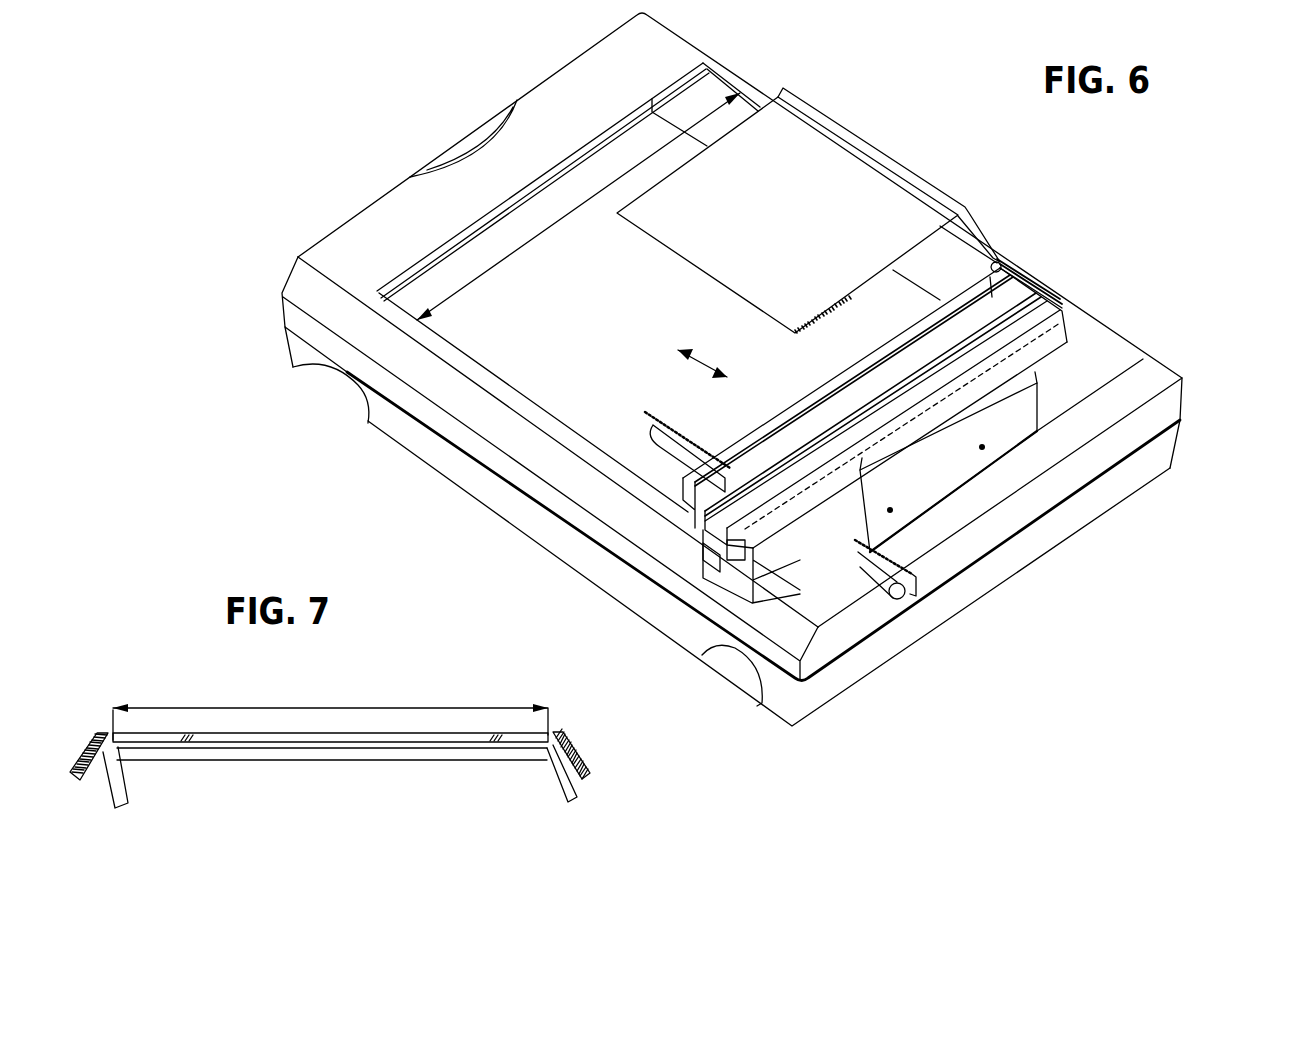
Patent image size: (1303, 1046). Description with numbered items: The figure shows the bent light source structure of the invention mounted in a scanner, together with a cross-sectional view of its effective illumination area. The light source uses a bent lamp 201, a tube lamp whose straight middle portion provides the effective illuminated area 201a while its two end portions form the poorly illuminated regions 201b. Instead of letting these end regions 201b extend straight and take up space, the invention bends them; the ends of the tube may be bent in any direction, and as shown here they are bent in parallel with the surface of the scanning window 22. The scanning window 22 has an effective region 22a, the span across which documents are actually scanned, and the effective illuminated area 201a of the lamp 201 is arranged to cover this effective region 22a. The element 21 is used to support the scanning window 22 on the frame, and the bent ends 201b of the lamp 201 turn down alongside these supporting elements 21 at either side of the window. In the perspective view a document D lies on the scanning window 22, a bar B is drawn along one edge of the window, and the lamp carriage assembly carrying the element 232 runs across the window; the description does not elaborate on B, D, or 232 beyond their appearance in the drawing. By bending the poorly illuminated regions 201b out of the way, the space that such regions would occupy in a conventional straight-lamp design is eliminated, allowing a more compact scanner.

In FIG. 6, the element 21 is at (1140, 380).
In FIG. 7, the element 21 is at (577, 750).
In FIG. 6, the scanning window 22 is at (620, 407).
In FIG. 7, the scanning window 22 is at (375, 738).
In FIG. 6, the effective region 22a is at (578, 206).
In FIG. 7, the effective region 22a is at (330, 708).
In FIG. 6, the bent lamp 201 is at (1047, 312).
In FIG. 7, the bent lamp 201 is at (293, 755).
In FIG. 7, the effective illuminated area 201a is at (551, 738).
In FIG. 7, the poorly illuminated regions 201b is at (108, 778).
In FIG. 6, the engaging portion 232 is at (1002, 264).
In FIG. 6, the guide bar B is at (805, 97).
In FIG. 6, the document D is at (787, 215).